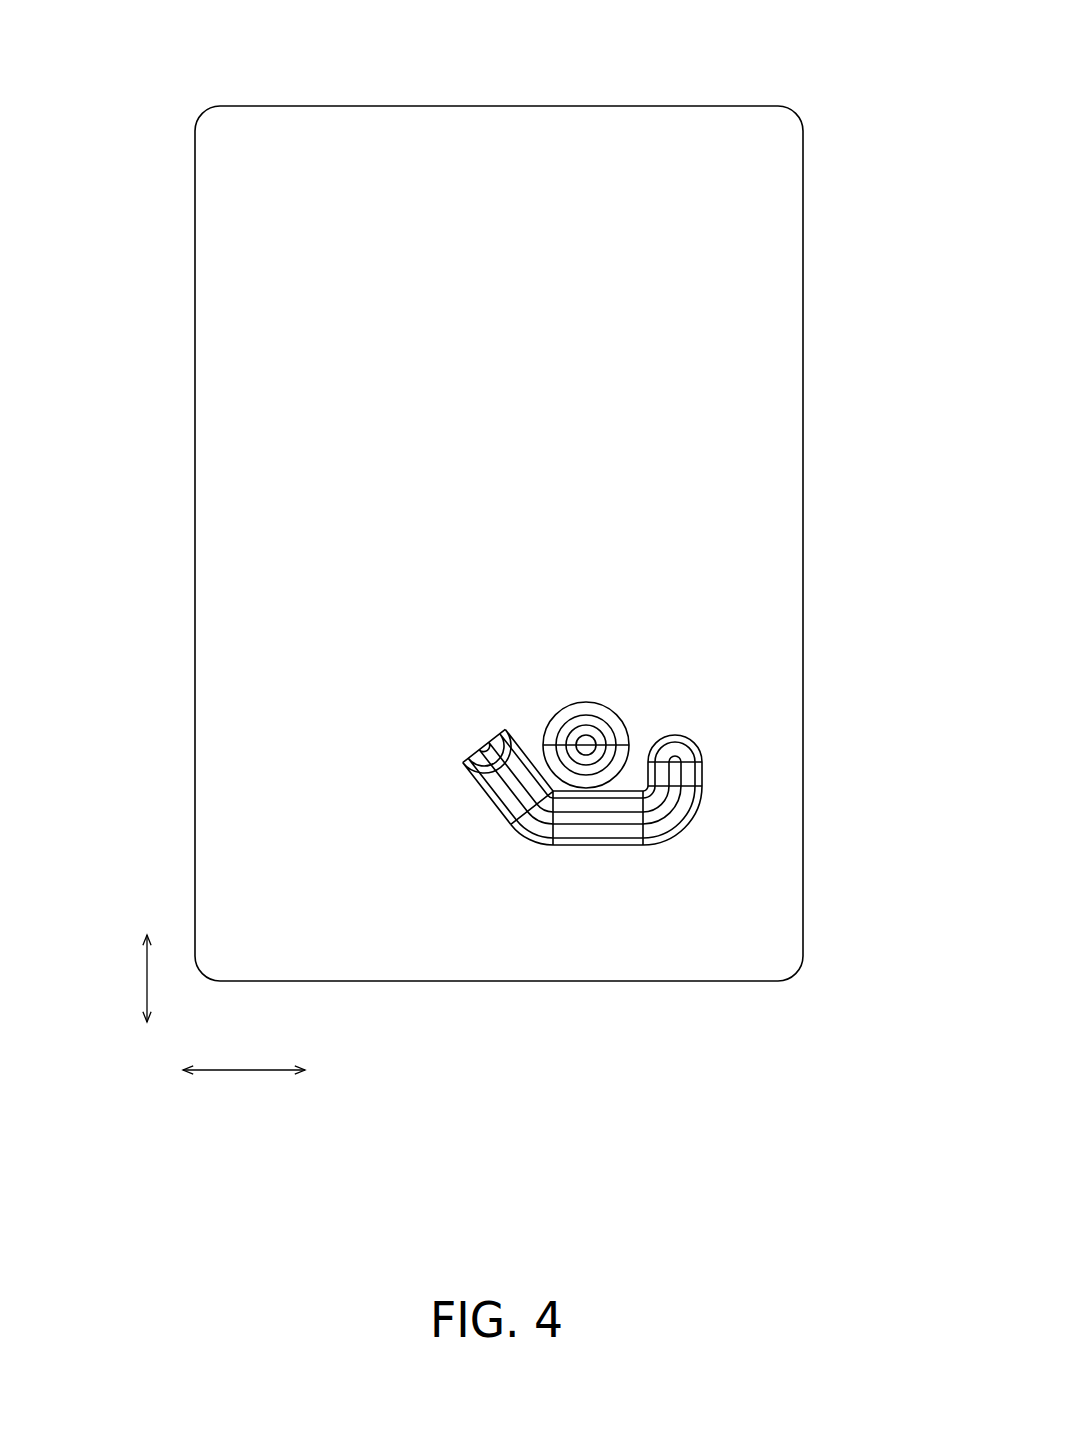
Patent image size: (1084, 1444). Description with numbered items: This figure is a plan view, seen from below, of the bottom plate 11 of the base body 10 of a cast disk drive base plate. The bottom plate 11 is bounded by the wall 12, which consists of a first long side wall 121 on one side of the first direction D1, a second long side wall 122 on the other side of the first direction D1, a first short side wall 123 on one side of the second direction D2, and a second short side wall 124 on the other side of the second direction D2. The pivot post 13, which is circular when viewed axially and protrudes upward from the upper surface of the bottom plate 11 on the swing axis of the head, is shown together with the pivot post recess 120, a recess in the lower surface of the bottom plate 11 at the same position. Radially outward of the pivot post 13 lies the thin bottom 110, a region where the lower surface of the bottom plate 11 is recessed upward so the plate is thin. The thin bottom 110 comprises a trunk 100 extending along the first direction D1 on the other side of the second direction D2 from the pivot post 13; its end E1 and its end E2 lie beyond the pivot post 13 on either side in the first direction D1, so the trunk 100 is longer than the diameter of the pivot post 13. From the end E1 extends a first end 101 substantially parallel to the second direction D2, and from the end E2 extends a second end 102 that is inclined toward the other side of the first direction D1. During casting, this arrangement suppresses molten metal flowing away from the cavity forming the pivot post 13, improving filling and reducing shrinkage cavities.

The base body 10 is at (498, 533).
The bottom plate 11 is at (643, 385).
The wall 12 is at (498, 545).
The first long side wall 121 is at (803, 507).
The second long side wall 122 is at (195, 507).
The first short side wall 123 is at (468, 107).
The second short side wall 124 is at (383, 983).
The pivot post 13 is at (724, 714).
The pivot post recess 120 is at (595, 740).
The thin bottom 110 is at (583, 992).
The trunk 100 is at (608, 828).
The first end 101 is at (678, 975).
The second end 102 is at (500, 972).
The end of the trunk on one side of the first direction E1 is at (664, 840).
The end of the trunk on the other side of the first direction E2 is at (530, 840).
The first direction D1 is at (244, 1057).
The second direction D2 is at (129, 978).